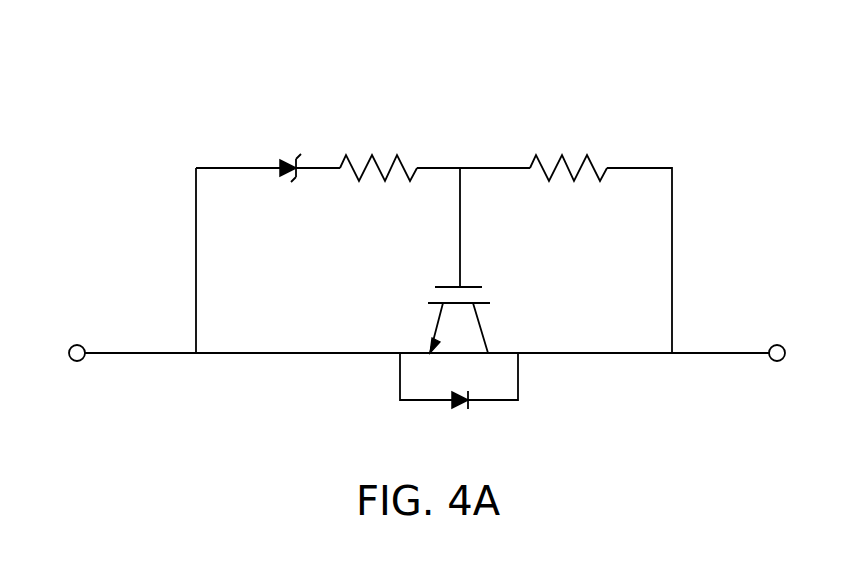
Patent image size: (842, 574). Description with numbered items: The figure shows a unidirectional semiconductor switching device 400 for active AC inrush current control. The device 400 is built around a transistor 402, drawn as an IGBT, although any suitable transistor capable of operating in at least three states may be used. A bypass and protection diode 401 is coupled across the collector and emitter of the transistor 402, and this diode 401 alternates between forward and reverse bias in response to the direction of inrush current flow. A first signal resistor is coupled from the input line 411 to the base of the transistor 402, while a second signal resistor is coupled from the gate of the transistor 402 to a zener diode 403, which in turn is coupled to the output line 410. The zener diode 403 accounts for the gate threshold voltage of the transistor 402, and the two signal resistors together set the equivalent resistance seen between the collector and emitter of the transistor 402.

The unidirectional semiconductor switching device 400 is at (705, 112).
The bypass and protection diode 401 is at (457, 405).
The transistor 402 is at (477, 286).
The zener diode 403 is at (296, 180).
The output line 410 is at (74, 345).
The input line 411 is at (780, 345).